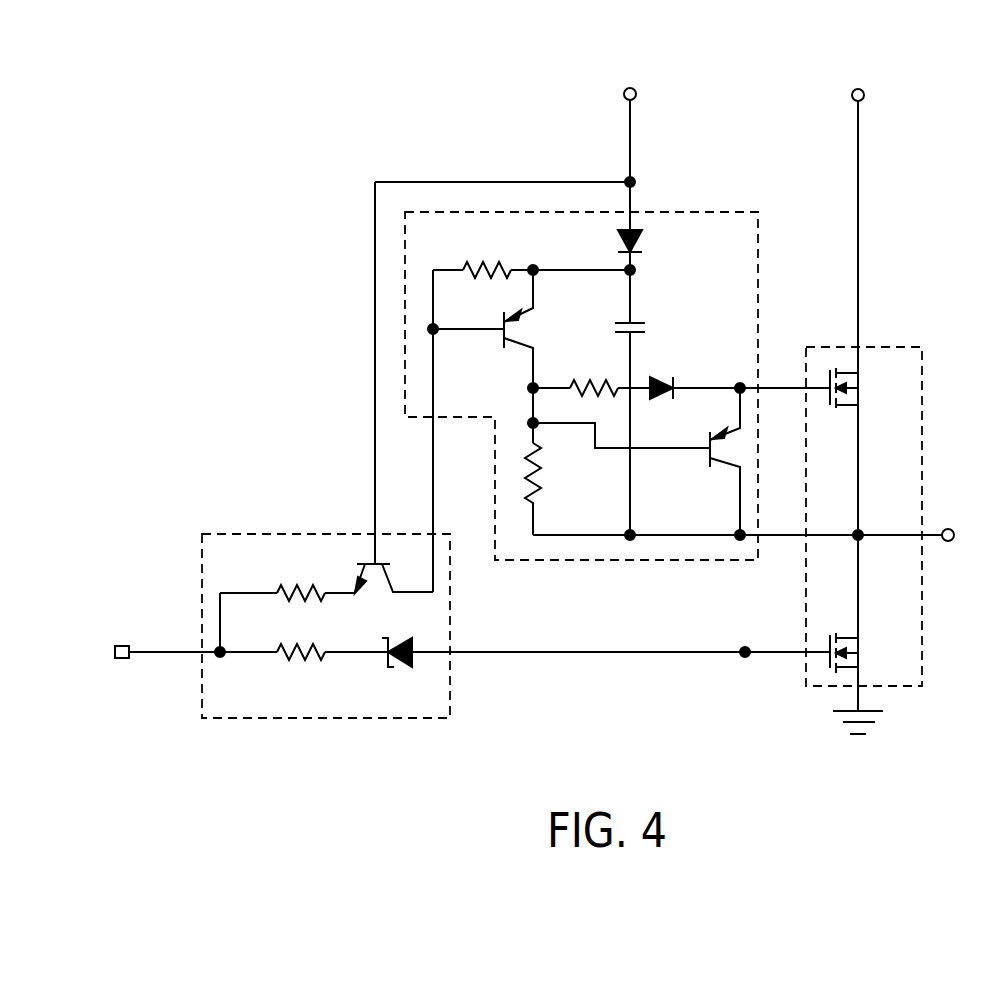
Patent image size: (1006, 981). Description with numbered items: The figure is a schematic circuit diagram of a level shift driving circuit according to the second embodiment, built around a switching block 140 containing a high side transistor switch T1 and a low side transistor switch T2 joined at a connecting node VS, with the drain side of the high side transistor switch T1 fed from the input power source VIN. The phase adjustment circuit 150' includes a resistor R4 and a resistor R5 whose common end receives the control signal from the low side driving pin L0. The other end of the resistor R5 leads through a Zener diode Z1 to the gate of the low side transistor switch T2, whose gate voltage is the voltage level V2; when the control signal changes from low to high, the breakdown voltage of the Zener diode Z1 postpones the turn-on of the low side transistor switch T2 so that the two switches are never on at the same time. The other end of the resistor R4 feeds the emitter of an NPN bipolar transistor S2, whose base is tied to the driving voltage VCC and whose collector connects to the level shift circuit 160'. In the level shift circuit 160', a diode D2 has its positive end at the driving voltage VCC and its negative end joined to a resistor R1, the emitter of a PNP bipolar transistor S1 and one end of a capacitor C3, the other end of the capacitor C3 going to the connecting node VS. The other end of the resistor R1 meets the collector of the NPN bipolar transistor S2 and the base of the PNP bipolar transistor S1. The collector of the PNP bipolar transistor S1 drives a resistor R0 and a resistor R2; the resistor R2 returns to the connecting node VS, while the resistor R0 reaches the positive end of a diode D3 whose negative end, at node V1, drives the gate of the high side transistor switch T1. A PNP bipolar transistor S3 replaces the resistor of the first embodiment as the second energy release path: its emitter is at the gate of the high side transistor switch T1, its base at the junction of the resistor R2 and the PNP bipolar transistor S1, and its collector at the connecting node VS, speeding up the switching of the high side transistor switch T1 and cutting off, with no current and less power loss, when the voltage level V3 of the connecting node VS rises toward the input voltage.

The switching unit 140 is at (897, 349).
The phase adjustment circuit 150' is at (283, 598).
The level shift circuit 160' is at (616, 362).
The resistor R1 is at (483, 253).
The resistor R0 is at (591, 373).
The resistor R2 is at (554, 489).
The resistor R4 is at (287, 577).
The resistor R5 is at (304, 675).
The diode D2 is at (652, 250).
The diode D3 is at (695, 375).
The capacitor C3 is at (651, 402).
The PNP bipolar transistor S1 is at (507, 329).
The NPN bipolar transistor S2 is at (394, 573).
The PNP bipolar transistor S3 is at (720, 461).
The high side transistor switch T1 is at (868, 451).
The low side transistor switch T2 is at (868, 623).
The Zener diode Z1 is at (394, 673).
The driving voltage VCC is at (631, 118).
The input power source VIN is at (859, 213).
The node V1 is at (778, 372).
The voltage level of the gate of the low side transistor switch V2 is at (621, 668).
The voltage level of the connecting node V3 is at (953, 517).
The connecting node VS is at (840, 549).
The low side driving pin L0 is at (161, 635).